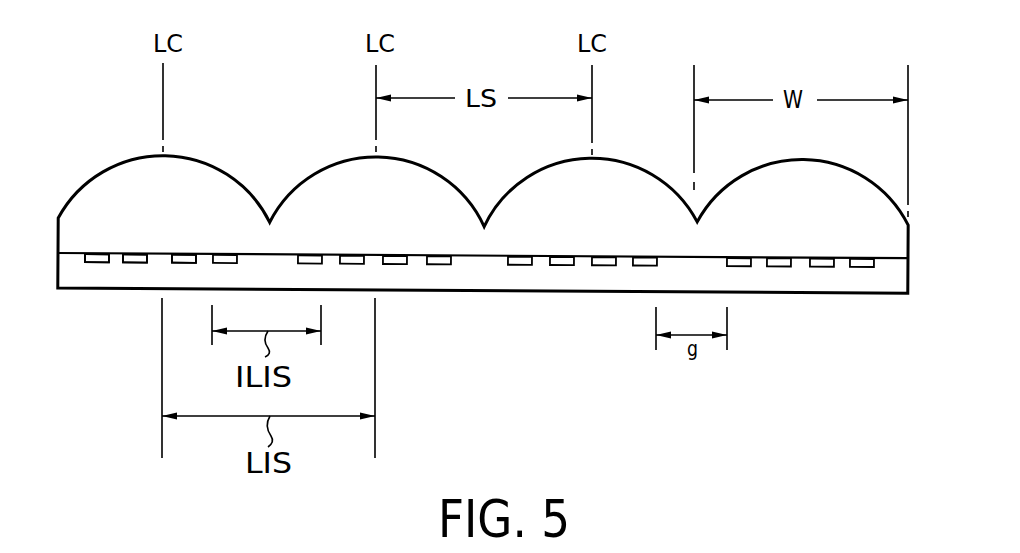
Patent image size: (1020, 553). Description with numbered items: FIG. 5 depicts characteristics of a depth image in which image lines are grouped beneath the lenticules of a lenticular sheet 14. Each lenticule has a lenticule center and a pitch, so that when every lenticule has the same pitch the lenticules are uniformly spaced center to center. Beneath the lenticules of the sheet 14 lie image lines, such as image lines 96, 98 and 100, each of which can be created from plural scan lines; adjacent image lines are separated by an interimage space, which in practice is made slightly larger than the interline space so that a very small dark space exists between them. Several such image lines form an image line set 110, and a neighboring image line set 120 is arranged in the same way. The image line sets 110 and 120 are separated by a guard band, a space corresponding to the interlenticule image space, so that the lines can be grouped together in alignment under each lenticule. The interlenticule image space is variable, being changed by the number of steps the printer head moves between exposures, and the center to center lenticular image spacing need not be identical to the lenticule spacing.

The lenticular lens sheet 14 is at (648, 173).
The image line 96 is at (95, 262).
The image line 98 is at (133, 262).
The image line 100 is at (188, 262).
The image line set 110 is at (233, 238).
The image line set 120 is at (443, 236).